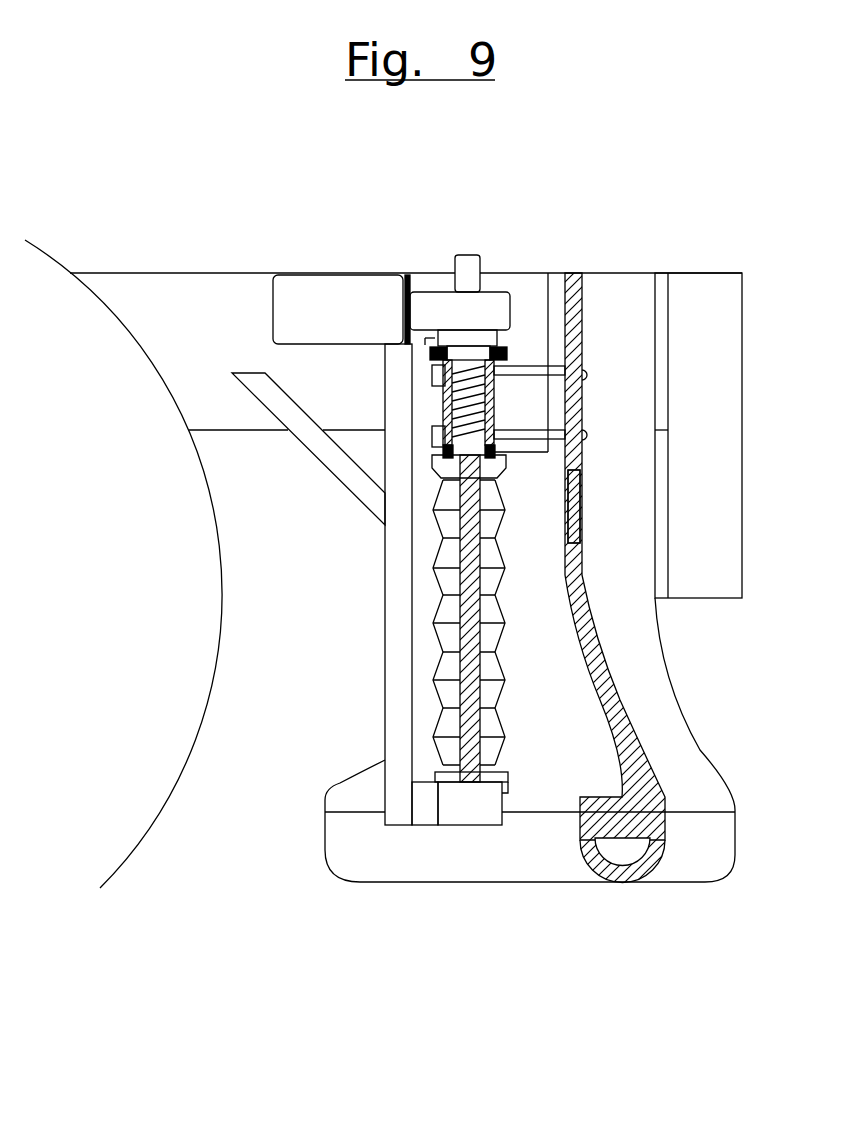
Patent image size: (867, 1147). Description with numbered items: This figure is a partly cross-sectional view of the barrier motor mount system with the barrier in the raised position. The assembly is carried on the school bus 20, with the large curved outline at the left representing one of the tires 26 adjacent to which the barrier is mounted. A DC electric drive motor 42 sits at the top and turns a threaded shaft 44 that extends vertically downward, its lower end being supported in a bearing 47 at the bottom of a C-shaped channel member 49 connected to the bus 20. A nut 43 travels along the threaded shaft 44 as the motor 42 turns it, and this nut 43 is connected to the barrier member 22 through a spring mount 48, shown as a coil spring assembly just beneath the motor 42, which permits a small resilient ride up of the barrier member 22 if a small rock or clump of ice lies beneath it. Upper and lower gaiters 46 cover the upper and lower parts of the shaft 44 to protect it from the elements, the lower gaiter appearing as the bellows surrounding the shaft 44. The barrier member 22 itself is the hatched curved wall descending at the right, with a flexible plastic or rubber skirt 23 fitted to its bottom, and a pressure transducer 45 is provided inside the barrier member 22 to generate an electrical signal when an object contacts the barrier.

The school bus 20 is at (252, 292).
The barrier member 22 is at (651, 855).
The skirt 23 is at (575, 572).
The tires 26 is at (123, 564).
The DC electric drive motor 42 is at (363, 298).
The nut 43 is at (435, 453).
The threaded shaft 44 is at (470, 268).
The pressure transducers 45 is at (576, 500).
The gaiters 46 is at (510, 356).
The bearing 47 is at (472, 812).
The spring mount 48 is at (493, 402).
The C-shaped channel member 49 is at (398, 527).